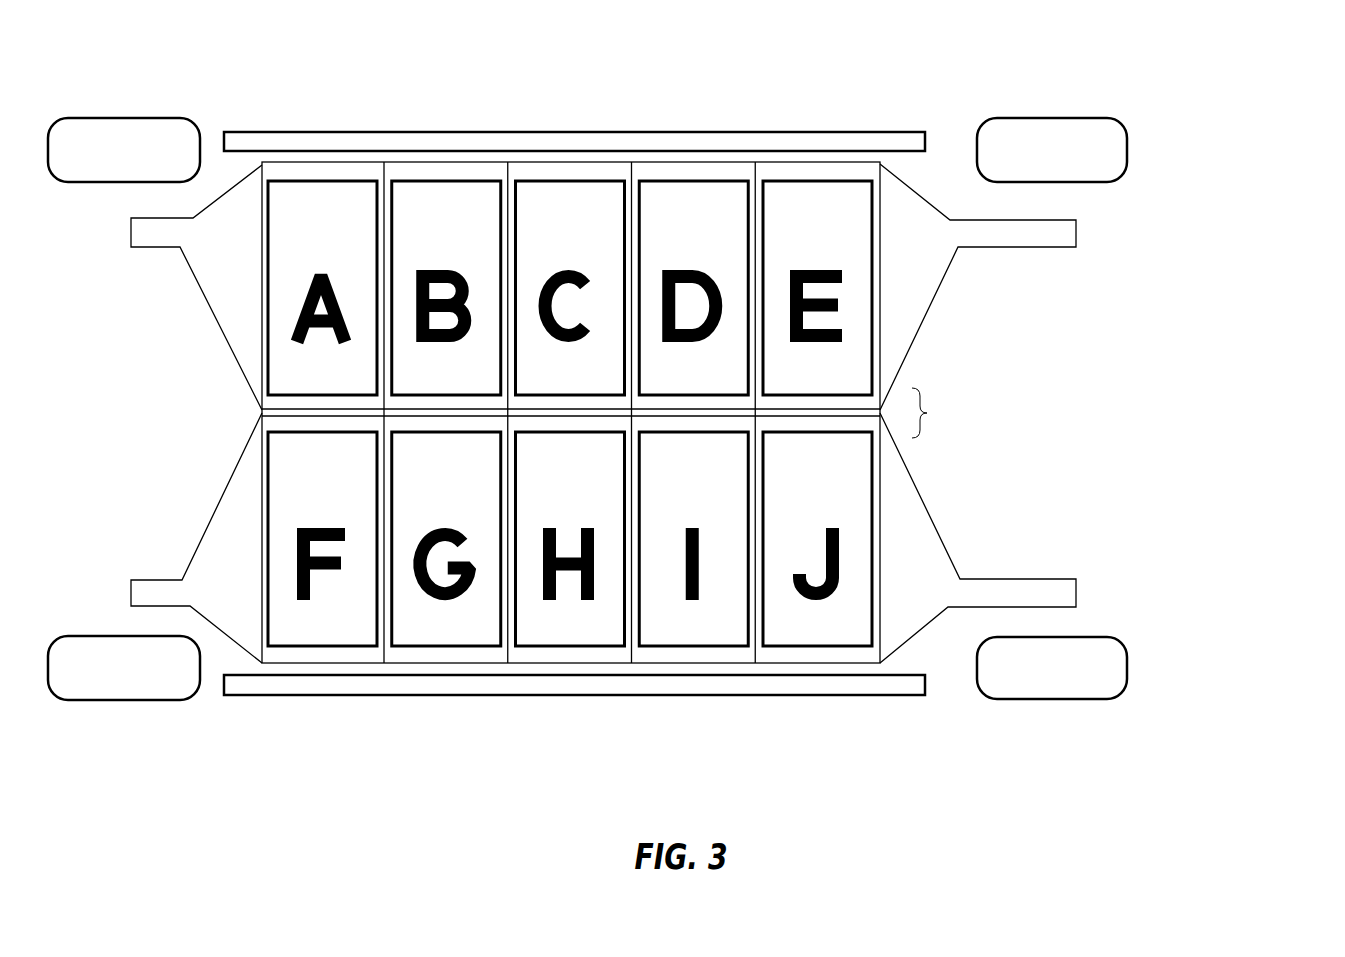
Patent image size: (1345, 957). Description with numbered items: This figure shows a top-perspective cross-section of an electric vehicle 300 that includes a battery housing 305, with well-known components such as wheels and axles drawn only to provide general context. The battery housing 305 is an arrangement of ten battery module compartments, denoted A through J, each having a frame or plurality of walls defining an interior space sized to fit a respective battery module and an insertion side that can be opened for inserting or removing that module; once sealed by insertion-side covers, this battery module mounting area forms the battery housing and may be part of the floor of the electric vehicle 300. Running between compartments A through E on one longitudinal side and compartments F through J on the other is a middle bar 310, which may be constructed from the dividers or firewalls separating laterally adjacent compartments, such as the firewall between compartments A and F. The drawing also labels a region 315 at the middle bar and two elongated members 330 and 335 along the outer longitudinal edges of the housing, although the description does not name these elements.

The electric vehicle 300 is at (686, 404).
The battery housing 305 is at (603, 404).
The middle bar 310 is at (561, 423).
The gap between compartment rows 315 is at (951, 413).
The first side rail 330 is at (590, 131).
The second side rail 335 is at (328, 693).